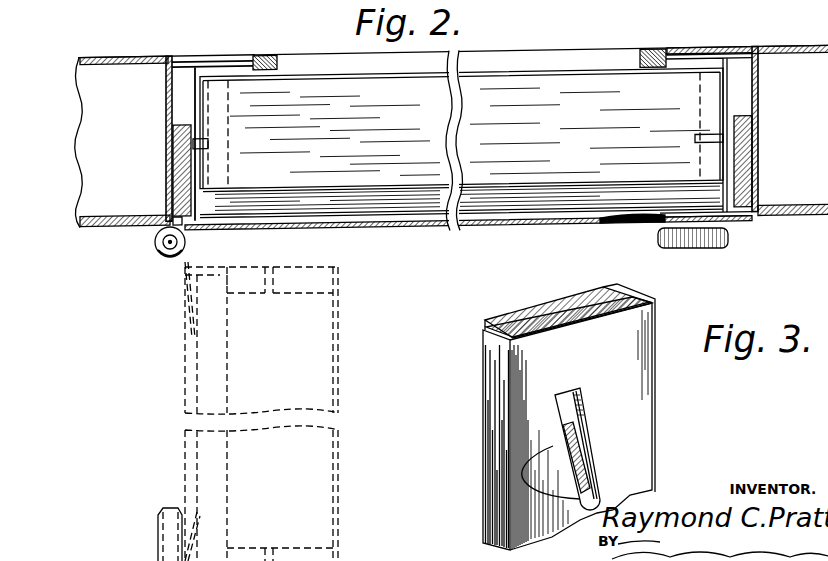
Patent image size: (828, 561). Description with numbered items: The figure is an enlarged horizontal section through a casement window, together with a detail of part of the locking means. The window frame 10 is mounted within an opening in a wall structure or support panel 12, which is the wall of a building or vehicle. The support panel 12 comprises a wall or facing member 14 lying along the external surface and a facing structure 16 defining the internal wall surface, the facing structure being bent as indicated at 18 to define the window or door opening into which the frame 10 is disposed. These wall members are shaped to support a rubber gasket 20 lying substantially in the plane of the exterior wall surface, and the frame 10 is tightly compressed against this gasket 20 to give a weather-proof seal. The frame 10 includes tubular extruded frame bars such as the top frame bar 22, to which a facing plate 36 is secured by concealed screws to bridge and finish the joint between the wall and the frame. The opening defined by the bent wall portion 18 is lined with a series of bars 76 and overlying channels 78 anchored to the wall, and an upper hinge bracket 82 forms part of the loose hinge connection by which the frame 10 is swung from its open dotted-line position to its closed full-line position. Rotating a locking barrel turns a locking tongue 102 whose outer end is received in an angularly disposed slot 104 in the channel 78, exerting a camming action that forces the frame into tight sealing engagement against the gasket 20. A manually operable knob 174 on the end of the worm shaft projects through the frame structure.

In FIG. 2, the window frame 10 is at (358, 316).
In FIG. 2, the wall structure or support panel 12 is at (135, 47).
In FIG. 2, the wall or facing member 14 is at (108, 64).
In FIG. 2, the facing structure 16 is at (96, 214).
In FIG. 2, the bent wall portion 18 is at (166, 119).
In FIG. 2, the gasket 20 is at (278, 62).
In FIG. 2, the top frame bar 22 is at (493, 96).
In FIG. 2, the facing plate 36 is at (212, 229).
In FIG. 2, the bar 76 is at (172, 158).
In FIG. 3, the bar 76 is at (527, 314).
In FIG. 2, the channel 78 is at (191, 126).
In FIG. 3, the channel 78 is at (523, 378).
In FIG. 2, the upper hinge bracket 82 is at (166, 252).
In FIG. 2, the locking tongue 102 is at (236, 143).
In FIG. 3, the locking tongue 102 is at (600, 487).
In FIG. 3, the slot 104 is at (560, 437).
In FIG. 2, the knob 174 is at (729, 238).